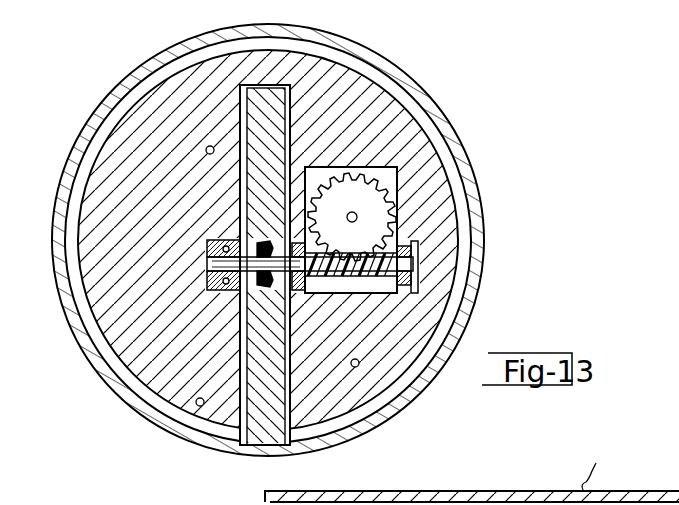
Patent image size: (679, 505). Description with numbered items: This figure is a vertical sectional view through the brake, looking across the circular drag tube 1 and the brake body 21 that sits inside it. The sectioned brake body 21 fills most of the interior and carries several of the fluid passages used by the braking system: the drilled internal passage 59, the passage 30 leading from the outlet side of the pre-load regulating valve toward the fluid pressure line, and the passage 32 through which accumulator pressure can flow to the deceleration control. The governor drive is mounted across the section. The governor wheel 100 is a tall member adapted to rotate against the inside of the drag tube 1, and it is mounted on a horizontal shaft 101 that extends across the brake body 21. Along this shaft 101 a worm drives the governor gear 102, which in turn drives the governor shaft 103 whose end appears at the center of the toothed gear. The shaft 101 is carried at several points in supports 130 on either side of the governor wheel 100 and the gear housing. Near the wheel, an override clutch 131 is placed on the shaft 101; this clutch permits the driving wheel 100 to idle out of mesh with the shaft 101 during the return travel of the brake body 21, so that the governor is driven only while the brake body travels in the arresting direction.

The drag tube 1 is at (69, 167).
The brake body 21 is at (92, 249).
The internal passage 59 is at (208, 147).
The passage 32 is at (360, 360).
The passage 30 is at (196, 406).
The governor wheel 100 is at (259, 438).
The shaft 101 is at (418, 266).
The governor gear 102 is at (398, 200).
The governor shaft 103 is at (352, 212).
The bearing 130 is at (215, 280).
The override clutch 131 is at (260, 245).